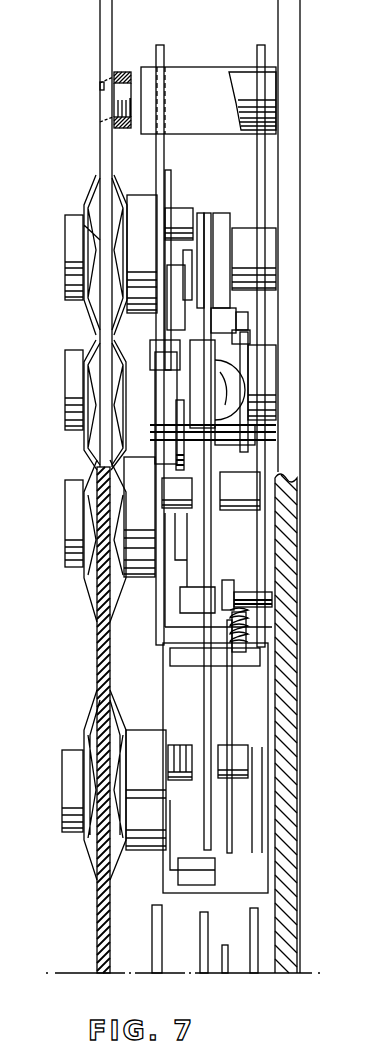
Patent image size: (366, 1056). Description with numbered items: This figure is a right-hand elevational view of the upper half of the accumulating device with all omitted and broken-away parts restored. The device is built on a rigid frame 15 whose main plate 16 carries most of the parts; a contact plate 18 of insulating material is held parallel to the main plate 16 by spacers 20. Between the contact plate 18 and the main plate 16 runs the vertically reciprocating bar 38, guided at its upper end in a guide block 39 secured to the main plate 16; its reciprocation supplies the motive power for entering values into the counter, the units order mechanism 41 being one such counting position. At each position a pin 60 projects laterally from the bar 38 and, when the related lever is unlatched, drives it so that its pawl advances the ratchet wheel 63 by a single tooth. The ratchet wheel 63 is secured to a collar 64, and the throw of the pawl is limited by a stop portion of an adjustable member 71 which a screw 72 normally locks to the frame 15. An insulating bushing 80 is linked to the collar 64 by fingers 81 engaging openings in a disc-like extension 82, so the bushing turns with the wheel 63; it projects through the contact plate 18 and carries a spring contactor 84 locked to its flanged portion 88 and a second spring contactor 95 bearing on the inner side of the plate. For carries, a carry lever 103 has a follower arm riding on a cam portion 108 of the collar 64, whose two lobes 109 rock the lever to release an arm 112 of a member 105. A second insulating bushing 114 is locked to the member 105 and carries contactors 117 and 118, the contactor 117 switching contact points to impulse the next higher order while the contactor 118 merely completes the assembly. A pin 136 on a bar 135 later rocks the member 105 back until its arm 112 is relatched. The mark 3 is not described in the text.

The rigid frame 15 is at (305, 404).
The main plate 16 is at (296, 104).
The contact plate 18 is at (103, 57).
The spacers 20 is at (121, 70).
The bar 38 is at (258, 553).
The guide block 39 is at (207, 130).
The units order mechanism 41 is at (235, 327).
The pin 60 is at (245, 484).
The ratchet wheel 63 is at (240, 438).
The collar 64 is at (160, 403).
The member 71 is at (244, 385).
The screw 72 is at (218, 386).
The bushing 80 is at (144, 840).
The fingers 81 is at (163, 835).
The disc like extension 82 is at (178, 445).
The spring contactor 84 is at (82, 345).
The flanged portion 88 is at (68, 373).
The spring contactor 95 is at (112, 383).
The carry lever 103 is at (210, 305).
The member 105 is at (180, 292).
The cam portion 108 is at (200, 408).
The lobes 109 is at (240, 345).
The arm 112 is at (215, 325).
The bushing 114 is at (138, 270).
The contactor 117 is at (121, 178).
The contactor 118 is at (77, 207).
The bar 135 is at (156, 617).
The pin 136 is at (178, 212).
The stray mark 3 is at (356, 473).